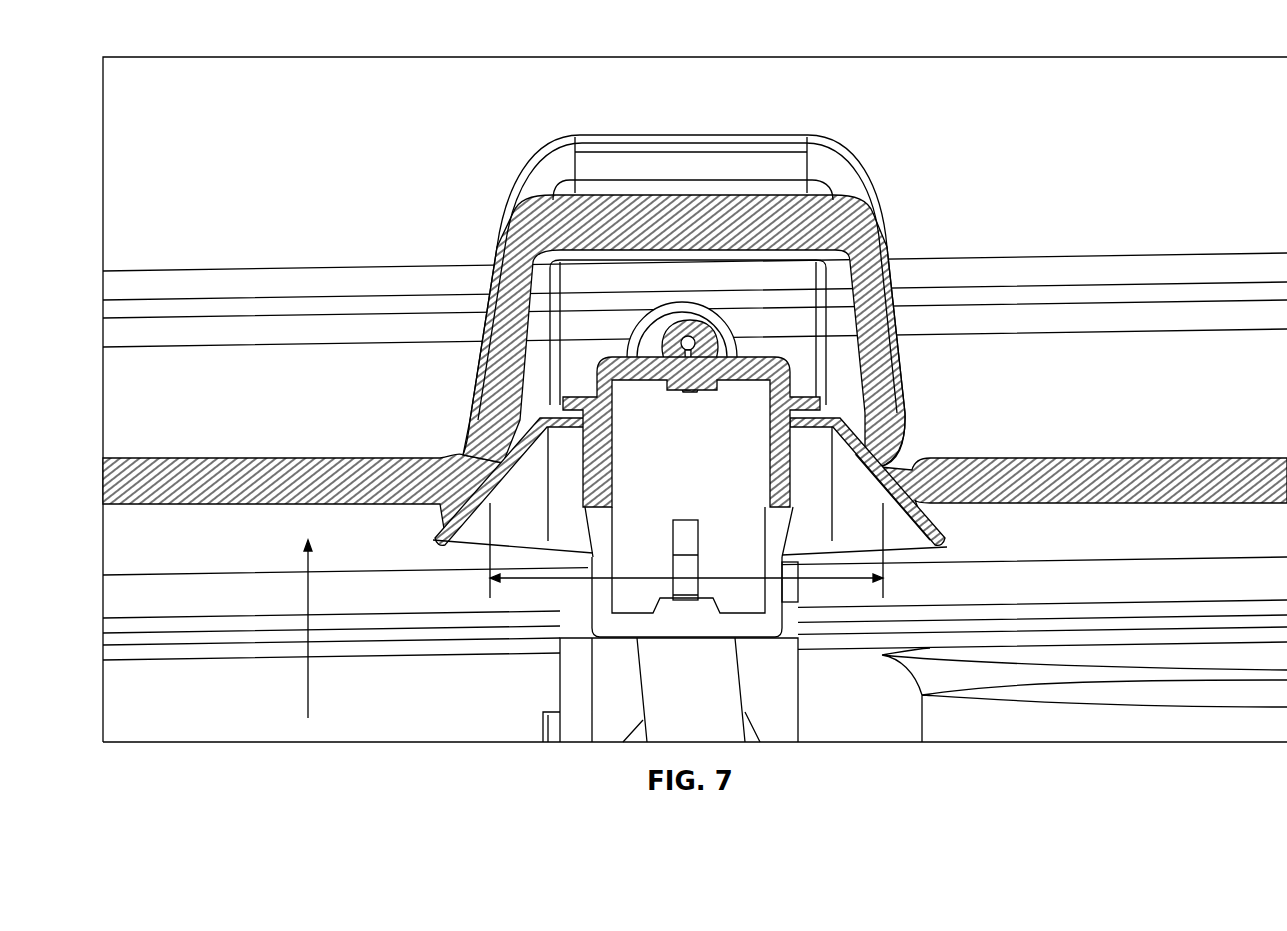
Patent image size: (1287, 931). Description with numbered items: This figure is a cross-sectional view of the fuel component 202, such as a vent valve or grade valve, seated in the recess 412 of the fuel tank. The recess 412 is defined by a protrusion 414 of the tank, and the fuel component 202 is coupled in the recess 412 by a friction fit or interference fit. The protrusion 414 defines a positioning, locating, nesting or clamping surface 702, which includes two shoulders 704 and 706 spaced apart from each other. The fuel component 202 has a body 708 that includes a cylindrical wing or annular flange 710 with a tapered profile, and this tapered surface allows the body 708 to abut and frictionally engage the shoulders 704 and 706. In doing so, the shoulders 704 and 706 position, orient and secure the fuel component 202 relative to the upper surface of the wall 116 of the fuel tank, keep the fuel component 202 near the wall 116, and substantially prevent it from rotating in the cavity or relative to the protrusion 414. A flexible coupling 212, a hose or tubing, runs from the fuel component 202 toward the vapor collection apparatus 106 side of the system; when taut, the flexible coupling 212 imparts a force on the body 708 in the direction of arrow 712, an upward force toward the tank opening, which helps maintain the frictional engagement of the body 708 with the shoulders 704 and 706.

The vapor collection apparatus 106 is at (1230, 255).
The wall 116 is at (172, 458).
The fuel component 202 is at (630, 395).
The flexible coupling 212 is at (517, 203).
The recess 412 is at (723, 283).
The protrusion 414 is at (750, 213).
The positioning surface 702 is at (923, 447).
The shoulder 704 is at (627, 572).
The shoulder 706 is at (495, 467).
The body 708 is at (885, 282).
The annular flange 710 is at (458, 507).
The arrow 712 is at (307, 673).